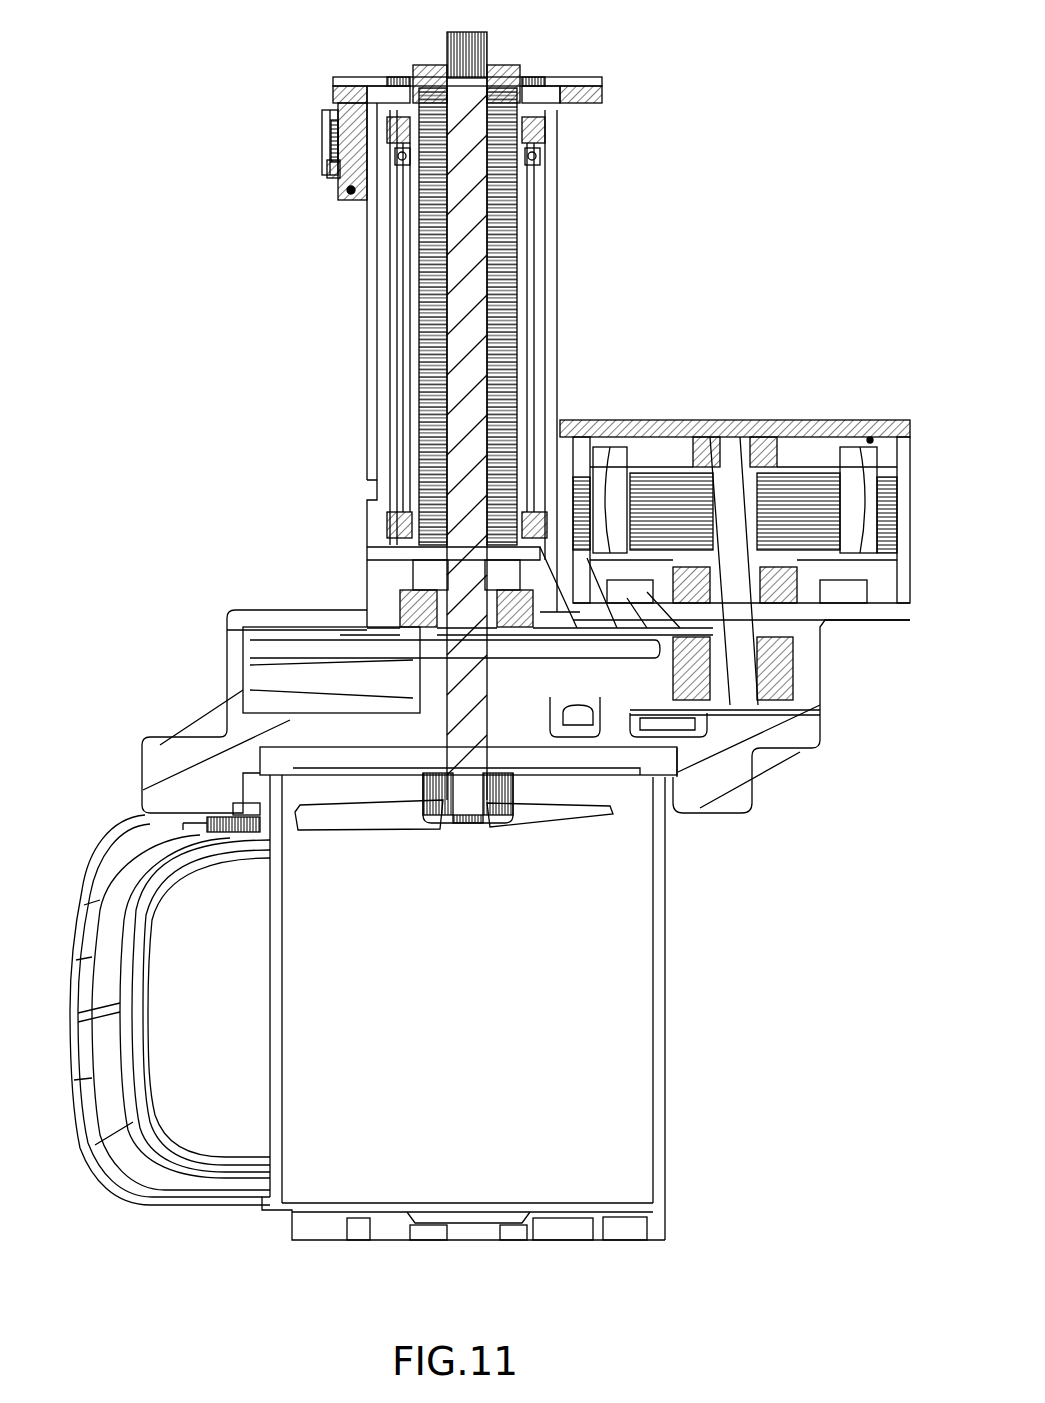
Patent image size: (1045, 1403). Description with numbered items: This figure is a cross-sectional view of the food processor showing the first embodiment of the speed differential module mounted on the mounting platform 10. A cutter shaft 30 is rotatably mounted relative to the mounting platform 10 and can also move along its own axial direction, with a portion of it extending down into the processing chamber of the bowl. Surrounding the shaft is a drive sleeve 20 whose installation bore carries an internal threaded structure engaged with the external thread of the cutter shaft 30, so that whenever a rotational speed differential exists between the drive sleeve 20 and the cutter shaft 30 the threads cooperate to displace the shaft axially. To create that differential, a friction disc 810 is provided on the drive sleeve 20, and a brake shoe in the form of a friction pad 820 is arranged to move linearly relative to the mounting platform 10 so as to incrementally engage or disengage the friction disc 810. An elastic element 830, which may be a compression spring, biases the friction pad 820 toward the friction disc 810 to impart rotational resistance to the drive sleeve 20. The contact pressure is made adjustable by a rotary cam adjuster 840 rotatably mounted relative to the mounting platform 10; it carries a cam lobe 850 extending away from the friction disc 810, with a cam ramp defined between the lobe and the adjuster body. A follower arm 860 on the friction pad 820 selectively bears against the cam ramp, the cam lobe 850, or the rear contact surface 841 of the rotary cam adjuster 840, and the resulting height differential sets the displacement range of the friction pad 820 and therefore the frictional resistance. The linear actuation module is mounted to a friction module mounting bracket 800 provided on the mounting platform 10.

The mounting platform 10 is at (390, 590).
The drive sleeve 20 is at (512, 300).
The cutter shaft 30 is at (472, 373).
The friction module mounting bracket 800 is at (385, 232).
The friction disc 810 is at (378, 88).
The friction pad 820 is at (353, 101).
The elastic element 830 is at (338, 123).
The rotary cam adjuster 840 is at (333, 157).
The rear contact surface 841 is at (340, 180).
The cam lobe 850 is at (365, 205).
The follower arm 860 is at (352, 192).